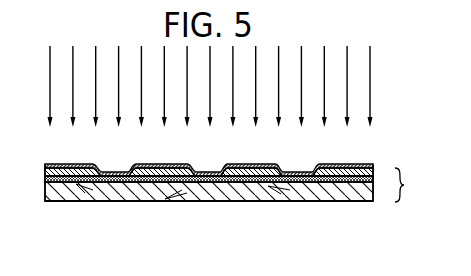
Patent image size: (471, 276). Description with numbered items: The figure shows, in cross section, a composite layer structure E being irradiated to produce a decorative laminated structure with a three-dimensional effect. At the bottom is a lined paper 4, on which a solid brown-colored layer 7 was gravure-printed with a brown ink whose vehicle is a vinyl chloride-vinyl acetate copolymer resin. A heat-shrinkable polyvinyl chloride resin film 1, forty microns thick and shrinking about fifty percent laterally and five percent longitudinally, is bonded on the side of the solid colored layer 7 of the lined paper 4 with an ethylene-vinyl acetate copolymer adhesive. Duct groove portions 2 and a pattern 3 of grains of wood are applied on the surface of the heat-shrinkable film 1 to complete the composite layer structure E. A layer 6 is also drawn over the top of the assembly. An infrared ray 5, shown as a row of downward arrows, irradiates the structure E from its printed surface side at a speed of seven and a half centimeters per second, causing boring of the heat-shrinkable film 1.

The heat-shrinkable polyvinyl chloride resin film 1 is at (74, 183).
The duct groove portions 2 is at (120, 180).
The pattern of grains of wood 3 is at (168, 190).
The lined paper 4 is at (291, 200).
The infrared ray 5 is at (325, 86).
The top layer 6 is at (296, 172).
The solid colored layer 7 is at (238, 181).
The composite layer structure E is at (408, 185).